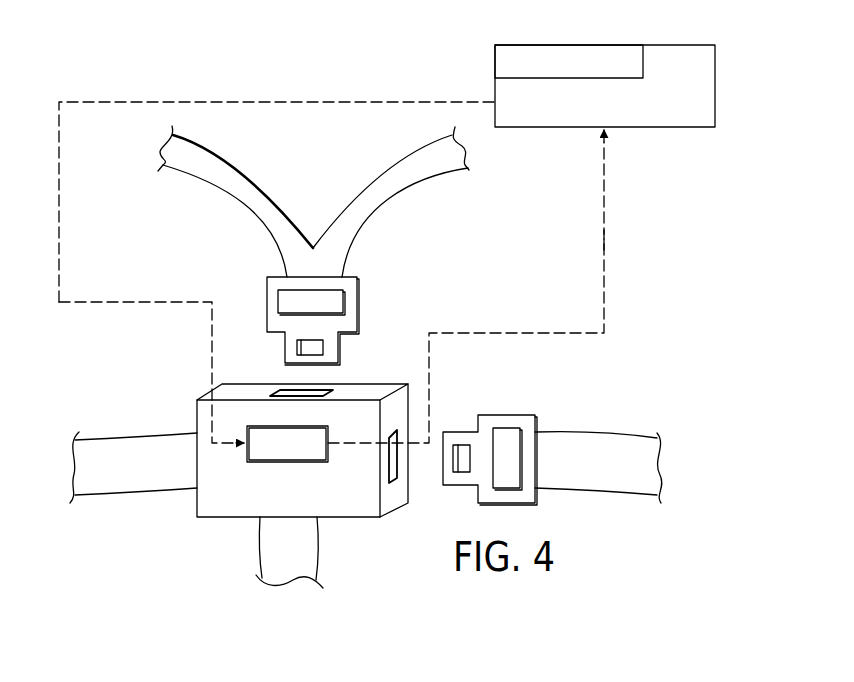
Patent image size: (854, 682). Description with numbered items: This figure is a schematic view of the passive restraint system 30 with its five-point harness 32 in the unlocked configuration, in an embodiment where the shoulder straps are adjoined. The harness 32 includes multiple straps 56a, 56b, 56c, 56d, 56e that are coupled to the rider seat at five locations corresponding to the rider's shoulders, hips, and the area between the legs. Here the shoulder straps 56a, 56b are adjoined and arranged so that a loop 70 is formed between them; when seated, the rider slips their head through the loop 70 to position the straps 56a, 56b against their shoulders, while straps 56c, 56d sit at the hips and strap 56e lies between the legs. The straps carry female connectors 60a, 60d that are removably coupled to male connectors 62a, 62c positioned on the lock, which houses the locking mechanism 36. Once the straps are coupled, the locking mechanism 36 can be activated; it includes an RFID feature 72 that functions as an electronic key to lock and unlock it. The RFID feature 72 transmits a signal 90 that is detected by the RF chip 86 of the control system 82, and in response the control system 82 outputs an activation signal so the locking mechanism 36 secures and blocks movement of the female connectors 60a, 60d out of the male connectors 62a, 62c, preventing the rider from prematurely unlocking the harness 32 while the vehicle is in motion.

The restraint system 30 is at (652, 194).
The 5-point harness 32 is at (243, 200).
The locking mechanism 36 is at (233, 520).
The strap 56a is at (250, 182).
The strap 56b is at (395, 158).
The strap 56c is at (157, 477).
The strap 56d is at (588, 477).
The strap 56e is at (295, 553).
The female connector 60a is at (357, 309).
The female connector 60d is at (508, 413).
The male connector 62a is at (307, 390).
The male connector 62c is at (400, 457).
The loop 70 is at (302, 76).
The RFID feature 72 is at (287, 463).
The control system 82 is at (717, 88).
The RF chip 86 is at (643, 62).
The signal 90 is at (603, 235).